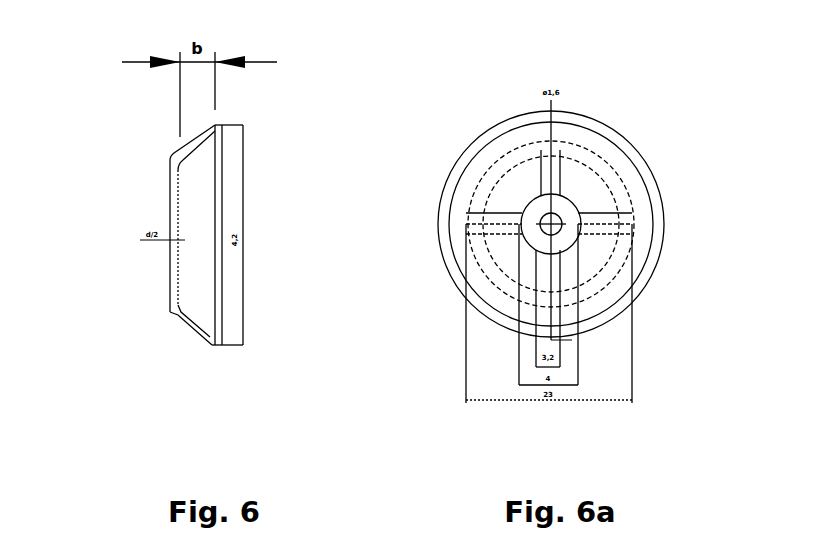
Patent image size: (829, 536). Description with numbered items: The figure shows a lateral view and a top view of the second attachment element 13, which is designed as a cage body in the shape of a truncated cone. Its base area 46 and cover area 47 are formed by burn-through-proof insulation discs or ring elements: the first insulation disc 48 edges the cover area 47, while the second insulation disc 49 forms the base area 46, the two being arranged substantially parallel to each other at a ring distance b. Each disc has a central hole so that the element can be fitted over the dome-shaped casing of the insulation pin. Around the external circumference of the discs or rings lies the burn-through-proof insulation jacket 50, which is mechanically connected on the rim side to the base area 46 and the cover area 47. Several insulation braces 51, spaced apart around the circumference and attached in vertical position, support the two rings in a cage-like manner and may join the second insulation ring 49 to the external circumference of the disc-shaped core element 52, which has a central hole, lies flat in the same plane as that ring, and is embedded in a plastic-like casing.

In FIG. 6, the second attachment element 13 is at (310, 127).
In FIG. 6A, the second attachment element 13 is at (482, 88).
In FIG. 6, the base area 46 is at (168, 213).
In FIG. 6, the cover area 47 is at (222, 269).
In FIG. 6, the first insulation disc 48 is at (213, 283).
In FIG. 6A, the first insulation disc 48 is at (445, 270).
In FIG. 6, the second insulation disc 49 is at (170, 193).
In FIG. 6A, the second insulation disc 49 is at (475, 187).
In FIG. 6, the insulation jacket 50 is at (188, 325).
In FIG. 6A, the insulation jacket 50 is at (509, 224).
In FIG. 6A, the insulation braces 51 is at (541, 173).
In FIG. 6, the core element 52 is at (177, 253).
In FIG. 6A, the core element 52 is at (563, 208).